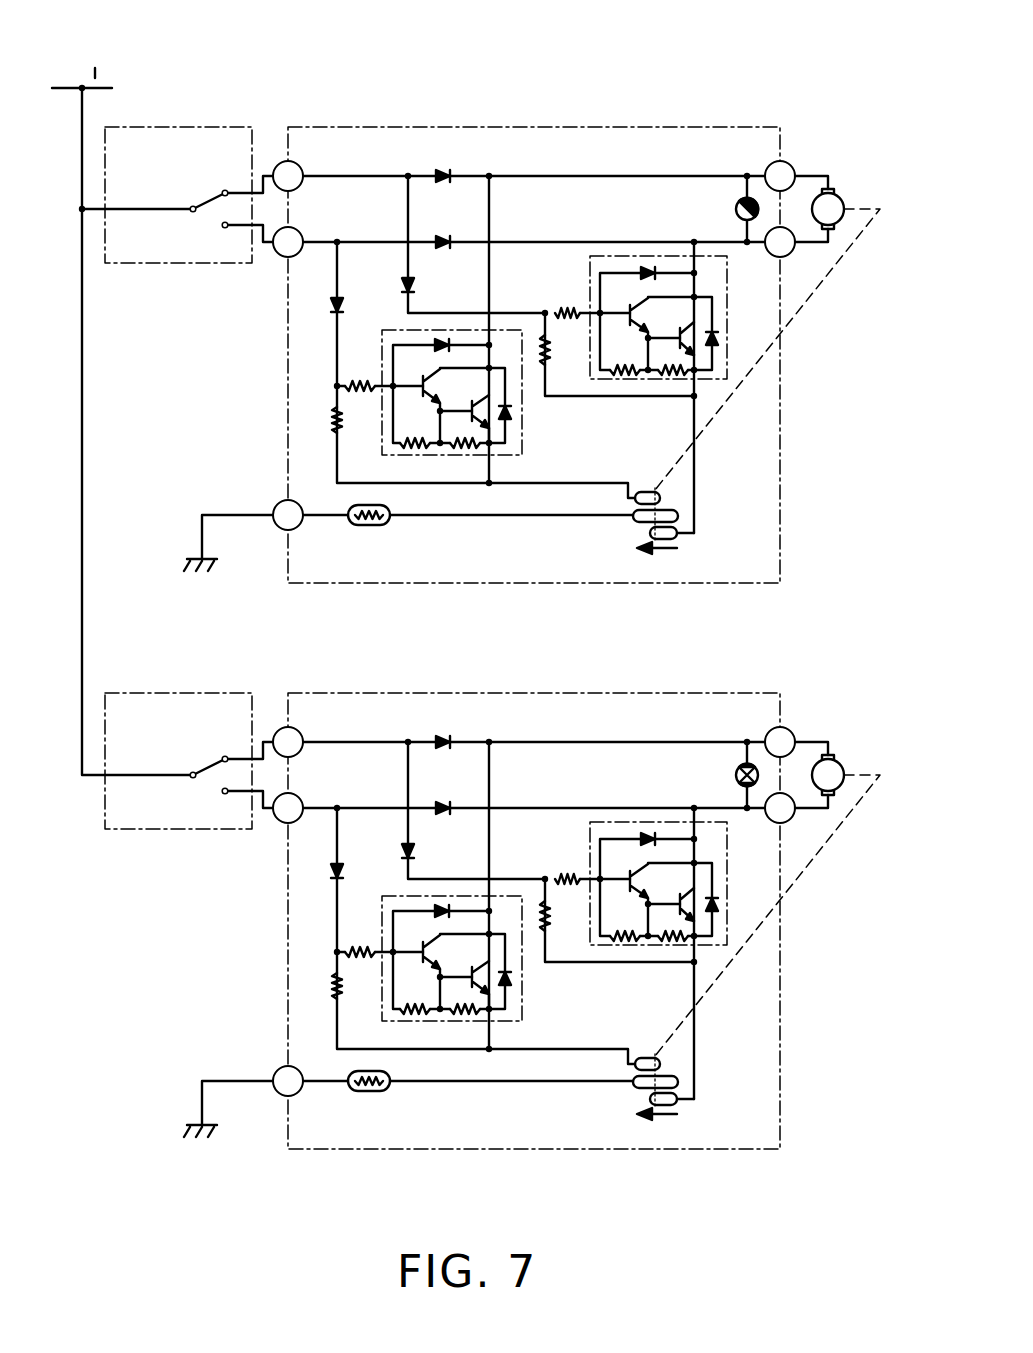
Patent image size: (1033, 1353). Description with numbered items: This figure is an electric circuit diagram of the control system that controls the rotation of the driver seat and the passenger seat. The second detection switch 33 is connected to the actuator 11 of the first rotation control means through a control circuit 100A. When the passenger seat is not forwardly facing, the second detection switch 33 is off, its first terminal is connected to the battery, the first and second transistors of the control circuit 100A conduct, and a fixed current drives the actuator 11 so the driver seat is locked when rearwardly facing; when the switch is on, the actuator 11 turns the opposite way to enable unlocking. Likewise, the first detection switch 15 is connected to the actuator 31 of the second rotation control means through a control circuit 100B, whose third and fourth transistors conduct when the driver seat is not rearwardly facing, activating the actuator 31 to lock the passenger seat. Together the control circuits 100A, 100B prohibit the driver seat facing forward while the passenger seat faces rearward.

The second detection switch 33 is at (180, 127).
The first detection switch 15 is at (180, 693).
The control circuit 100A is at (288, 372).
The control circuit 100B is at (288, 938).
The actuator (motor) 11 is at (843, 198).
The actuator (motor) 31 is at (843, 764).